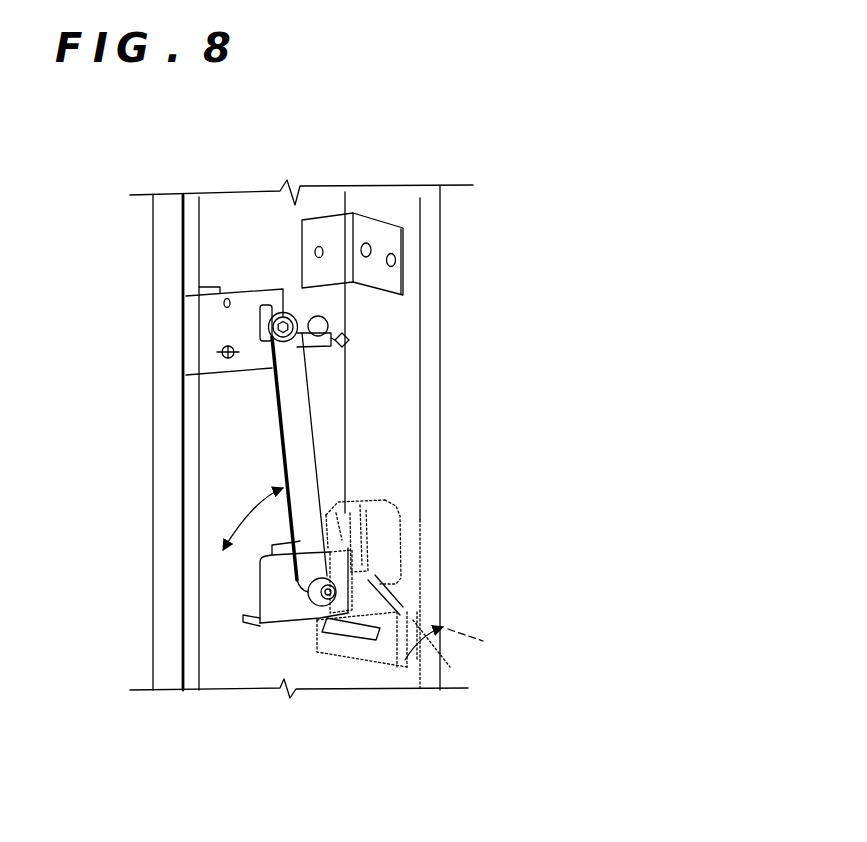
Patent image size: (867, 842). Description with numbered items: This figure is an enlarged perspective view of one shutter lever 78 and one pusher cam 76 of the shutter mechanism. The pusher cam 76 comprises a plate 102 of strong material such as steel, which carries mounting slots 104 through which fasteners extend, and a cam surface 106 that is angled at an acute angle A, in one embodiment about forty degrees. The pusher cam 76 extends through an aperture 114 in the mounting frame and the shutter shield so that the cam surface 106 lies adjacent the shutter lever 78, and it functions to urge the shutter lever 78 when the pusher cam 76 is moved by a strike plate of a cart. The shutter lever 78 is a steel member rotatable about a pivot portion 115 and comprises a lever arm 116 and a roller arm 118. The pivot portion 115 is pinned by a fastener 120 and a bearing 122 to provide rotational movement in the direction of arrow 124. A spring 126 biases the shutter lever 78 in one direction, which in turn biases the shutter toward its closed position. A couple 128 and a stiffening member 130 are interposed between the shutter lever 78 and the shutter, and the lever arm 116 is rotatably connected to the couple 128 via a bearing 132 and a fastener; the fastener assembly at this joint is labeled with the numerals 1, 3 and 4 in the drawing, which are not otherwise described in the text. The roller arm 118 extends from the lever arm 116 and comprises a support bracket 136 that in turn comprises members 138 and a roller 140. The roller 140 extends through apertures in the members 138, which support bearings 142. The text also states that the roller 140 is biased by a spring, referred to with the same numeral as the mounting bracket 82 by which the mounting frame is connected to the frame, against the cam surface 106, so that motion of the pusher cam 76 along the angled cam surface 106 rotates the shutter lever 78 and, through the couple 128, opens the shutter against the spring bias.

The washer 1 is at (268, 212).
The nut 3 is at (286, 318).
The bolt head 4 is at (295, 207).
The pusher cam 76 is at (372, 640).
The shutter lever 78 is at (313, 430).
The mounting bracket 82 is at (377, 248).
The plate 102 is at (397, 667).
The mounting slot 104 is at (363, 632).
The cam surface 106 is at (432, 618).
The aperture 114 is at (322, 655).
The pivot portion 115 is at (260, 567).
The lever arm 116 is at (281, 431).
The roller arm 118 is at (325, 512).
The fastener 120 is at (308, 597).
The bearing 122 is at (298, 581).
The arrow 124 is at (250, 517).
The spring 126 is at (306, 320).
The couple 128 is at (200, 340).
The stiffening member 130 is at (163, 397).
The bearing 132 is at (270, 320).
The support bracket 136 is at (410, 524).
The member 138 is at (402, 546).
The roller 140 is at (405, 570).
The bearing 142 is at (336, 513).
The angle A is at (425, 643).